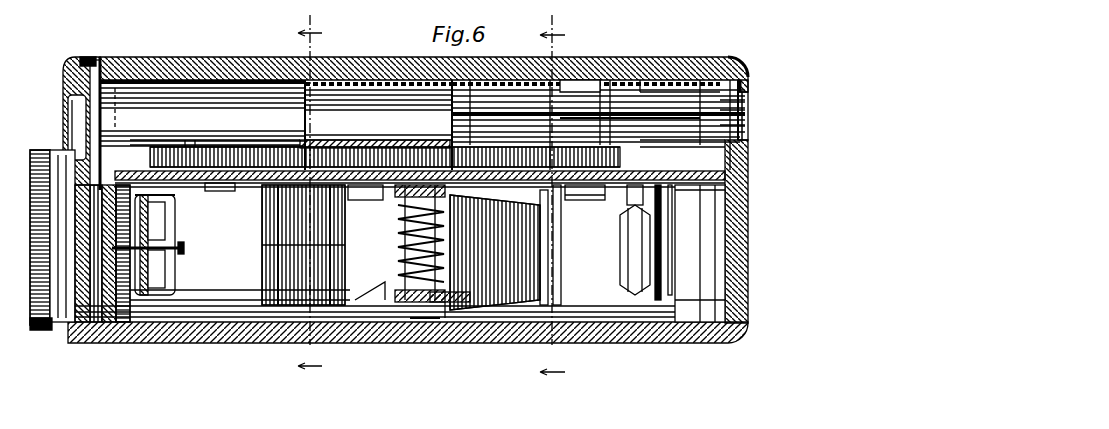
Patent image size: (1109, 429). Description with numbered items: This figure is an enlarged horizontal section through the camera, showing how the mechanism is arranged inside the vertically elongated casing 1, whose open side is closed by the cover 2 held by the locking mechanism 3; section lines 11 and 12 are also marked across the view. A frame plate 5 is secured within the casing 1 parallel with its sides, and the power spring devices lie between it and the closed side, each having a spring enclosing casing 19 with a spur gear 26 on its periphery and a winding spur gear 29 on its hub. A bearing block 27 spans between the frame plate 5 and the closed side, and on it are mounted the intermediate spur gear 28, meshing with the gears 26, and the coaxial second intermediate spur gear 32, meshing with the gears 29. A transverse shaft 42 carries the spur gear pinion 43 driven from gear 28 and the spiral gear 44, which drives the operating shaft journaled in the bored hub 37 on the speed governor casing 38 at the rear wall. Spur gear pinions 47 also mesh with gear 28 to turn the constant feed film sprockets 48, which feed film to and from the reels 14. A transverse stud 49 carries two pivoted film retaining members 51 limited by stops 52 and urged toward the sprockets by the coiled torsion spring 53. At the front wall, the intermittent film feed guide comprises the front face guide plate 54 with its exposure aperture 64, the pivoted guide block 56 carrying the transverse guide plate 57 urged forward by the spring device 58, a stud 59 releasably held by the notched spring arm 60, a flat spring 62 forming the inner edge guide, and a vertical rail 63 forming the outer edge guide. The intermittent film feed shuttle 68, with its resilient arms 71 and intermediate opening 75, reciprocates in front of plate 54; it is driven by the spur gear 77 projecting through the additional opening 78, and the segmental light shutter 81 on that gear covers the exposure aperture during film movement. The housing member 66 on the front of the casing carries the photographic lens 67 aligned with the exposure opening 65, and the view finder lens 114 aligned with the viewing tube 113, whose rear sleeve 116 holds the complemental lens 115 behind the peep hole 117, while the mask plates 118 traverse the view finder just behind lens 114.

The casing 1 is at (705, 60).
The cover 2 is at (662, 343).
The locking mechanism 3 is at (420, 325).
The frame plate 5 is at (749, 182).
The section line 11- 11 is at (564, 203).
The section line 12- 12 is at (324, 202).
The reels 14 is at (600, 310).
The spring enclosing casing 19 is at (660, 62).
The spur gears 26 is at (750, 165).
The bearing block 27 is at (492, 82).
The intermediate spur gear 28 is at (368, 200).
The spur gears 29 is at (736, 68).
The second intermediate spur gear 32 is at (408, 80).
The bored hub 37 is at (735, 148).
The speed governor casing 38 is at (705, 215).
The transverse shaft 42 is at (576, 70).
The spur gear pinion 43 is at (572, 185).
The spiral gear 44 is at (605, 130).
The spur gear pinions 47 is at (240, 146).
The constant feed film sprockets 48 is at (340, 302).
The transverse stud 49 is at (448, 302).
The film retaining members 51 is at (549, 275).
The stops 52 is at (556, 205).
The coiled torsion spring 53 is at (446, 240).
The front face guide plate 54 is at (135, 340).
The guide block 56 is at (176, 288).
The transverse guide plate 57 is at (150, 328).
The spring device 58 is at (185, 248).
The stud 59 is at (150, 140).
The notched spring arm 60 is at (222, 191).
The flat spring 62 is at (190, 143).
The vertical rail 63 is at (143, 333).
The exposure aperture 64 is at (165, 228).
The exposure opening 65 is at (82, 335).
The housing member 66 is at (86, 57).
The photographic lens 67 is at (32, 330).
The intermittent film feed shuttle 68 is at (118, 338).
The resilient arms 71 is at (165, 205).
The intermediate opening 75 is at (165, 268).
The spur gear 77 is at (55, 326).
The additional opening 78 is at (105, 328).
The segmental light shutter 81 is at (70, 162).
The viewing tube 113 is at (266, 58).
The lens 114 is at (64, 78).
The complemental lens 115 is at (750, 88).
The sleeve 116 is at (729, 57).
The peep hole 117 is at (752, 118).
The mask plates 118 is at (112, 60).